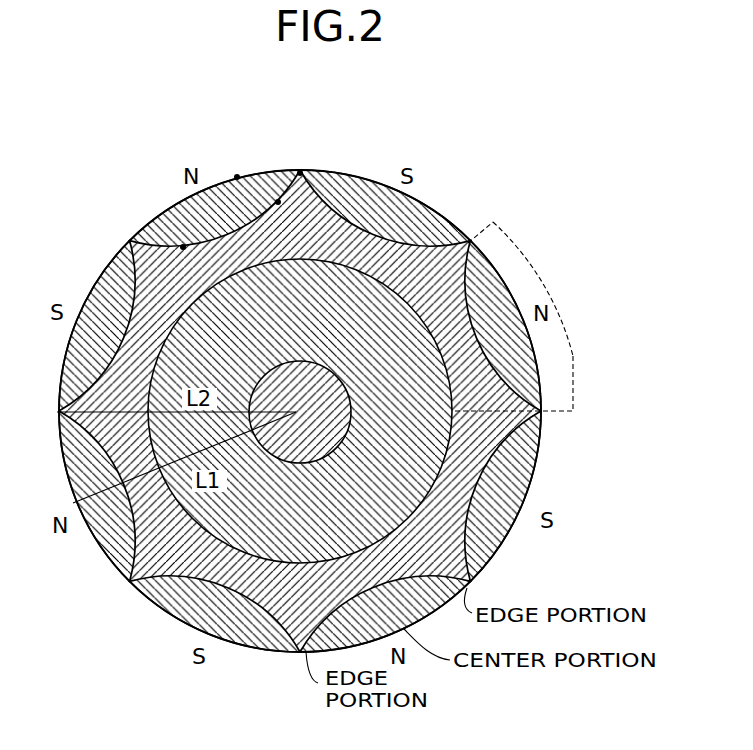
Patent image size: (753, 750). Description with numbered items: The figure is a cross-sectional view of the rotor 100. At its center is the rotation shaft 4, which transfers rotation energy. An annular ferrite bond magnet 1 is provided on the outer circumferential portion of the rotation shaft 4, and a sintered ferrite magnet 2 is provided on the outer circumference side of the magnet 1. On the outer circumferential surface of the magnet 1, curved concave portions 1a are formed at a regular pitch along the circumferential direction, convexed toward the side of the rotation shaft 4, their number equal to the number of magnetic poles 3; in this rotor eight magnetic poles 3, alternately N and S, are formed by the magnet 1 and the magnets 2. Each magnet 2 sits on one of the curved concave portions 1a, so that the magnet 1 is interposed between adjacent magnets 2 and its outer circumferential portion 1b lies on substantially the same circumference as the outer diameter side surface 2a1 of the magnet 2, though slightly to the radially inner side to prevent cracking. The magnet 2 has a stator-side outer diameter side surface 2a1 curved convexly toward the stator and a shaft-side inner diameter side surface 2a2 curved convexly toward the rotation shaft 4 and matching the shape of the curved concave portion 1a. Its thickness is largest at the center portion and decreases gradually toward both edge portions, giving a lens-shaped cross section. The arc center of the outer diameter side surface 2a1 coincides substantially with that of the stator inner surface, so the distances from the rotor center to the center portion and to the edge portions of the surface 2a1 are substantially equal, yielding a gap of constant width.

The rotor 100 is at (483, 214).
The ferrite bond magnet 1 is at (490, 420).
The curved concave portion 1a is at (183, 248).
The outer circumferential portion 1b is at (300, 173).
The sintered ferrite magnet 2 is at (422, 220).
The outer diameter side surface 2a1 is at (237, 177).
The inner diameter side surface 2a2 is at (278, 202).
The magnetic pole 3 is at (573, 356).
The rotation shaft 4 is at (317, 427).